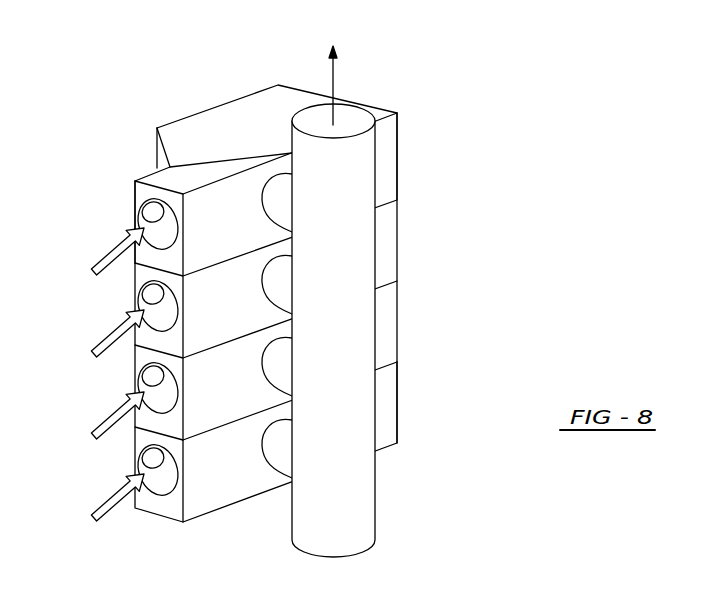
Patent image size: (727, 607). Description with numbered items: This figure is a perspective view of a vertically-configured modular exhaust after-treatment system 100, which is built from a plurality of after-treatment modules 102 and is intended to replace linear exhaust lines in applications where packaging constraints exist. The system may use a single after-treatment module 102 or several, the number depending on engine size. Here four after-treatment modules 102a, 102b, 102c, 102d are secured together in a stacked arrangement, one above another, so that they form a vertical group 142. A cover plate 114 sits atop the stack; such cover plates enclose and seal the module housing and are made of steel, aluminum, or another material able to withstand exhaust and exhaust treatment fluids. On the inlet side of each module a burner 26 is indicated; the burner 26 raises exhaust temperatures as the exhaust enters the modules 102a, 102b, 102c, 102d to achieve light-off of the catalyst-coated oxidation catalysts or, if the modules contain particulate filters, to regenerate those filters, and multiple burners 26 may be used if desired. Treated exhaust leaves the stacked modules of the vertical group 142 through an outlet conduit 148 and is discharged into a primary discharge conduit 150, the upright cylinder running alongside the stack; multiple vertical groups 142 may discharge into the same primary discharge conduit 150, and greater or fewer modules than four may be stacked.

The modular exhaust after-treatment system 100 is at (94, 130).
The after-treatment module 102 is at (397, 120).
The after-treatment module 102a is at (397, 410).
The after-treatment module 102b is at (397, 327).
The after-treatment module 102c is at (397, 243).
The after-treatment module 102d is at (397, 150).
The cover plate 114 is at (245, 108).
The vertical group 142 is at (598, 177).
The outlet conduit 148 is at (280, 452).
The primary discharge conduit 150 is at (352, 497).
The burner 26 is at (130, 212).